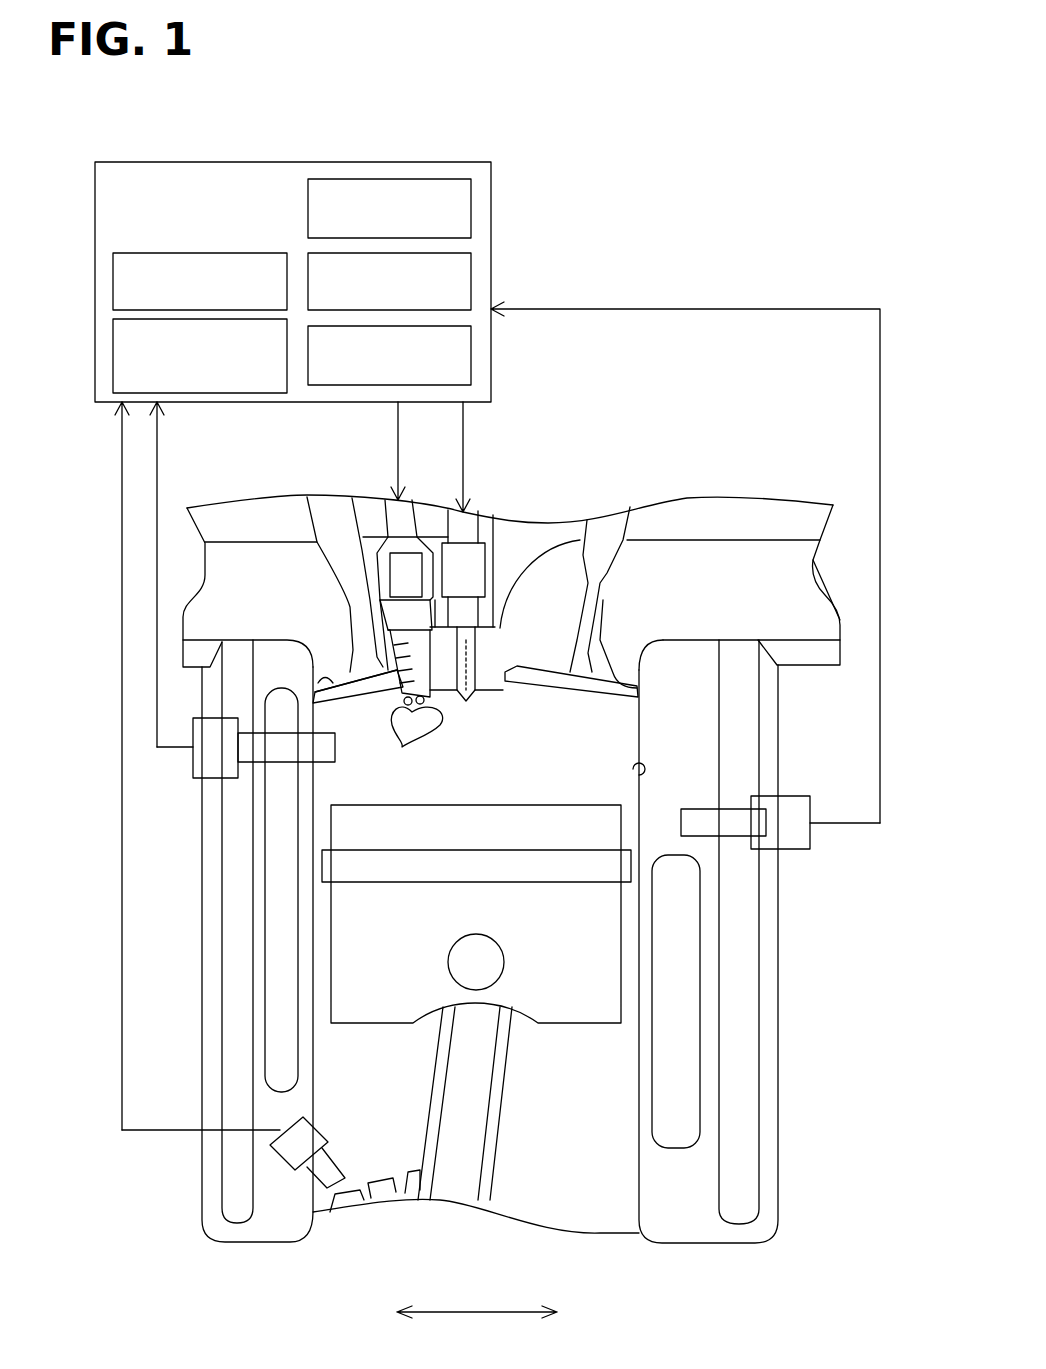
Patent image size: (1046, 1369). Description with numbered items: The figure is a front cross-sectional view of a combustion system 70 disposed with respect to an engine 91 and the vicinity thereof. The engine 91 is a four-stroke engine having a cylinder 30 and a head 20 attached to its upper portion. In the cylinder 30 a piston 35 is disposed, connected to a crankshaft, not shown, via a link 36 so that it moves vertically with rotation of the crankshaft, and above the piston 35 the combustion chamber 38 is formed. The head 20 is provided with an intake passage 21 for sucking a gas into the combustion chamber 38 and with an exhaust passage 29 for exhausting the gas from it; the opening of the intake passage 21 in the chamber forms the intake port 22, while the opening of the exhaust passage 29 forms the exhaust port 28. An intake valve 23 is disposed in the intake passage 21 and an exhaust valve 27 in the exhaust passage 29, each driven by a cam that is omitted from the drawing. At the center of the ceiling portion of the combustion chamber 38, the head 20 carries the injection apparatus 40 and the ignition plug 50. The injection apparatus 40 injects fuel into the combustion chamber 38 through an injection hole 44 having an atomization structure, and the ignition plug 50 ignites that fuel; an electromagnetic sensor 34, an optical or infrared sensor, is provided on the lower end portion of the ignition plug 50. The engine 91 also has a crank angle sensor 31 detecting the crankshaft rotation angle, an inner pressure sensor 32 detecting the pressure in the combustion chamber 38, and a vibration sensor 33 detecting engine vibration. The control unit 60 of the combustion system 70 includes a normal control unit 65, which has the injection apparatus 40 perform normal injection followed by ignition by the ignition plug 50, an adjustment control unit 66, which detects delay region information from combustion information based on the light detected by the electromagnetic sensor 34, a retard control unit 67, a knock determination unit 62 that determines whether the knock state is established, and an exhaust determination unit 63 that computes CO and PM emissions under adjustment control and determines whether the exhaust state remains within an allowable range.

The head 20 is at (700, 528).
The intake passage 21 is at (808, 582).
The intake port 22 is at (613, 673).
The intake valve 23 is at (575, 688).
The exhaust valve 27 is at (343, 692).
The exhaust port 28 is at (337, 677).
The exhaust passage 29 is at (245, 558).
The cylinder 30 is at (770, 1135).
The crank angle sensor 31 is at (337, 1167).
The inner pressure sensor 32 is at (203, 758).
The vibration sensor 33 is at (810, 835).
The electromagnetic sensor 34 is at (400, 735).
The piston 35 is at (517, 827).
The link 36 is at (467, 1168).
The combustion chamber 38 is at (640, 772).
The injection apparatus 40 is at (480, 523).
The injection hole 44 is at (457, 702).
The ignition plug 50 is at (387, 515).
The control unit 60 is at (208, 185).
The knock determination unit 62 is at (112, 273).
The exhaust determination unit 63 is at (112, 358).
The normal control unit 65 is at (473, 198).
The adjustment control unit 66 is at (473, 270).
The retard control unit 67 is at (473, 355).
The combustion system 70 is at (428, 150).
The engine 91 is at (747, 213).